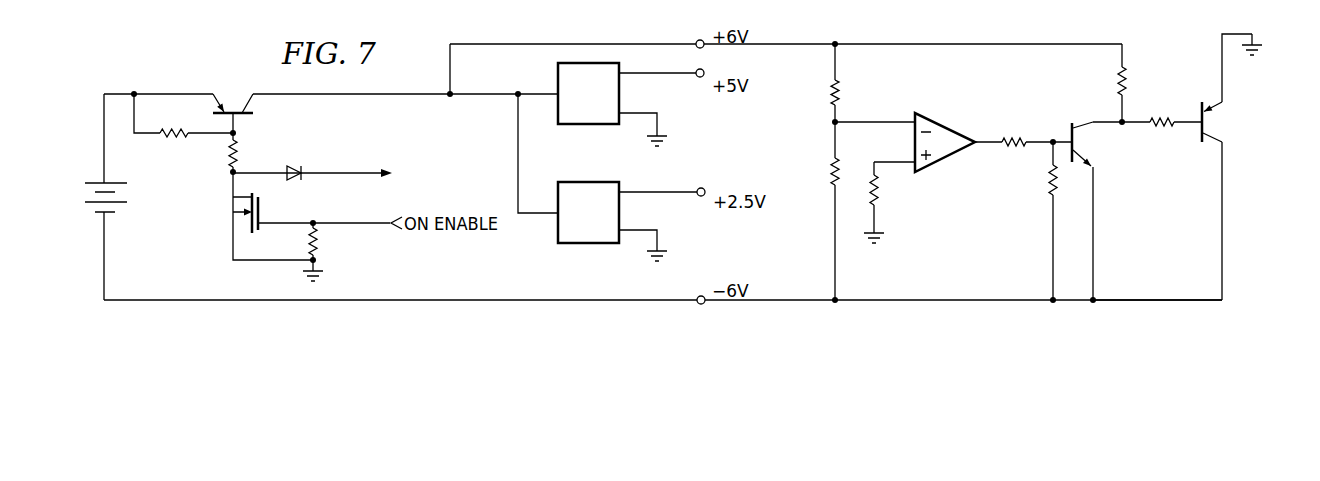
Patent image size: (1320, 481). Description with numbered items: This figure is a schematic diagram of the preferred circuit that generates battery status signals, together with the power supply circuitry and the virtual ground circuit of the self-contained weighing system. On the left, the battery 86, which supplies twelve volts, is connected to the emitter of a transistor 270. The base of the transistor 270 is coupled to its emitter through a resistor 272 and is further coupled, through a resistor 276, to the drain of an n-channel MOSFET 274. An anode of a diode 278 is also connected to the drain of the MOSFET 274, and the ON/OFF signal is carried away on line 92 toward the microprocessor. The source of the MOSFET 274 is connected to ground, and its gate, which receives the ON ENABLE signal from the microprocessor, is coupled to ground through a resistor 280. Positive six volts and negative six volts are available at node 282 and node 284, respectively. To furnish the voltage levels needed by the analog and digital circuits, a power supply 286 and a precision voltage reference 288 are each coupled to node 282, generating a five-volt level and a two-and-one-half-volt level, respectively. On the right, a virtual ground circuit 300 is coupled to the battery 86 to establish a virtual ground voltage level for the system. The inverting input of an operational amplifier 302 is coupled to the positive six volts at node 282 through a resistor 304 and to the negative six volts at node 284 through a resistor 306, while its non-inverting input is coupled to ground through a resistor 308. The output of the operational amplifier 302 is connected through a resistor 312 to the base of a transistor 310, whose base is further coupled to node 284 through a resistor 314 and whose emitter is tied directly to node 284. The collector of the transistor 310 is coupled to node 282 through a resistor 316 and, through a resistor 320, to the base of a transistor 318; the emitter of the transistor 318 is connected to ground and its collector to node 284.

The battery 86 is at (102, 182).
The line 92 is at (356, 172).
The transistor 270 is at (250, 93).
The resistor 272 is at (173, 140).
The n-channel MOSFET 274 is at (233, 218).
The resistor 276 is at (240, 147).
The diode 278 is at (302, 178).
The resistor 280 is at (318, 246).
The node 282 is at (697, 40).
The node 284 is at (703, 296).
The power supply 286 is at (588, 93).
The precision voltage reference 288 is at (588, 212).
The virtual ground circuit 300 is at (1246, 206).
The operational amplifier 302 is at (940, 122).
The resistor 304 is at (838, 90).
The resistor 306 is at (832, 170).
The resistor 308 is at (878, 185).
The transistor 310 is at (1080, 120).
The resistor 312 is at (1012, 138).
The resistor 314 is at (1050, 185).
The resistor 316 is at (1128, 80).
The transistor 318 is at (1210, 135).
The resistor 320 is at (1158, 130).